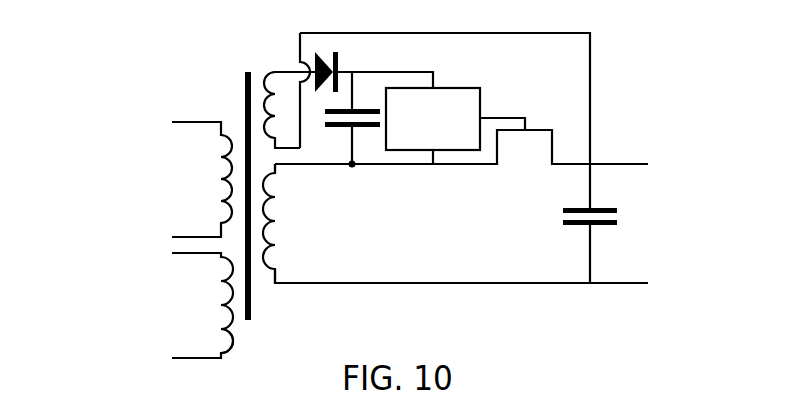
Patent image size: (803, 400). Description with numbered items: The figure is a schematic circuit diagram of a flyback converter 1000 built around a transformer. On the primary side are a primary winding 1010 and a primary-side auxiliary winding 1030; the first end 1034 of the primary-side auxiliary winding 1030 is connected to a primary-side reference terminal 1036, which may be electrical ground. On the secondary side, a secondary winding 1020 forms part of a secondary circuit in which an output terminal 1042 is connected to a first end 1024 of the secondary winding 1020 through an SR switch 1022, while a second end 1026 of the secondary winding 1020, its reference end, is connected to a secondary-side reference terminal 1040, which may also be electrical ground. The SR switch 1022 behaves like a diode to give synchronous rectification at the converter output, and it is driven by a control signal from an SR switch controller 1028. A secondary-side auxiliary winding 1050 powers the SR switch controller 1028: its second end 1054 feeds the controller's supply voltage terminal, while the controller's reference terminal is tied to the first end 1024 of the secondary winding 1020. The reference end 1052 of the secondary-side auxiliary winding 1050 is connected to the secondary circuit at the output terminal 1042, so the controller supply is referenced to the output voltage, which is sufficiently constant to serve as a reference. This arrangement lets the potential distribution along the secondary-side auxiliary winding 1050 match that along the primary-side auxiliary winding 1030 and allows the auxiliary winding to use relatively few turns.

The flyback converter 1000 is at (640, 42).
The primary winding 1010 is at (226, 182).
The secondary winding 1020 is at (278, 228).
The SR switch 1022 is at (553, 147).
The first end of the secondary winding 1024 is at (277, 172).
The second end of the secondary winding 1026 is at (277, 284).
The SR switch controller 1028 is at (460, 102).
The primary-side auxiliary winding 1030 is at (230, 297).
The first end of the primary-side auxiliary winding 1034 is at (218, 353).
The primary-side reference terminal 1036 is at (185, 359).
The secondary-side reference terminal 1040 is at (612, 284).
The output terminal 1042 is at (648, 164).
The secondary-side auxiliary winding 1050 is at (263, 102).
The reference end of the secondary-side auxiliary winding 1052 is at (285, 152).
The second end of the secondary-side auxiliary winding 1054 is at (272, 68).